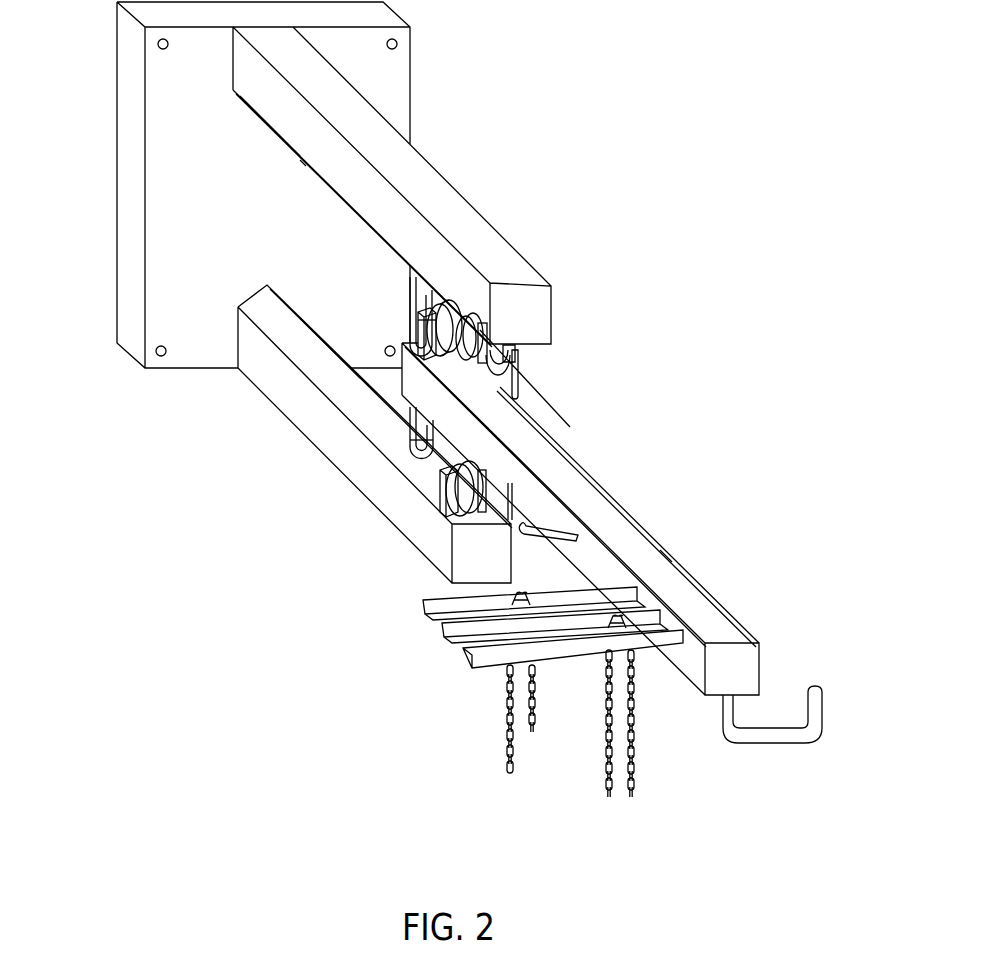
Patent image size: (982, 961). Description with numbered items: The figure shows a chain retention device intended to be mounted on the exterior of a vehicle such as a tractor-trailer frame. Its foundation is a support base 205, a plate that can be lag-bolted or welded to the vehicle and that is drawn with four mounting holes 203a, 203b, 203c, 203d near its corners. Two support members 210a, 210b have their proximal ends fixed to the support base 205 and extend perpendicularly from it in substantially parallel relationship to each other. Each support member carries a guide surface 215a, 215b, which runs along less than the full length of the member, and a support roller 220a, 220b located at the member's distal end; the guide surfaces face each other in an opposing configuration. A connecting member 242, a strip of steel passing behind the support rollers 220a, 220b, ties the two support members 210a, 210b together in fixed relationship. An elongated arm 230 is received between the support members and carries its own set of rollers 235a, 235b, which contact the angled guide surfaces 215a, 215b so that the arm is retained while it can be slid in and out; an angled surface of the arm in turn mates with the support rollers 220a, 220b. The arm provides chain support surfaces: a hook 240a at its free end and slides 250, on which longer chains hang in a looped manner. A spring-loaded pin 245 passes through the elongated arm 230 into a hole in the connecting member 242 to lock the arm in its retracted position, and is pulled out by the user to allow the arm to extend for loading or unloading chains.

The support base 205 is at (157, 164).
The mounting hole 203a is at (158, 44).
The mounting hole 203b is at (397, 44).
The mounting hole 203c is at (156, 351).
The mounting hole 203d is at (385, 351).
The support member 210a is at (470, 200).
The support member 210b is at (380, 487).
The guide surface 215a is at (300, 165).
The guide surface 215b is at (363, 413).
The support roller 220a is at (525, 362).
The support roller 220b is at (443, 498).
The roller 235a is at (413, 322).
The roller 235b is at (415, 448).
The connecting member 242 is at (520, 390).
The elongated arm 230 is at (556, 465).
The spring-loaded pin 245 is at (524, 535).
The slide 250 is at (479, 674).
The hook 240a is at (778, 747).